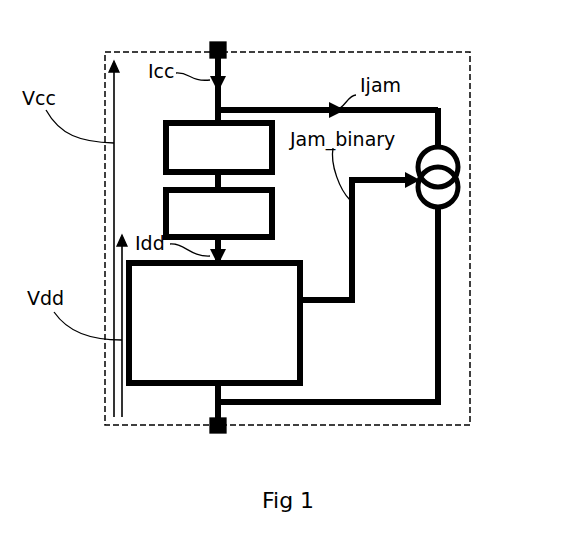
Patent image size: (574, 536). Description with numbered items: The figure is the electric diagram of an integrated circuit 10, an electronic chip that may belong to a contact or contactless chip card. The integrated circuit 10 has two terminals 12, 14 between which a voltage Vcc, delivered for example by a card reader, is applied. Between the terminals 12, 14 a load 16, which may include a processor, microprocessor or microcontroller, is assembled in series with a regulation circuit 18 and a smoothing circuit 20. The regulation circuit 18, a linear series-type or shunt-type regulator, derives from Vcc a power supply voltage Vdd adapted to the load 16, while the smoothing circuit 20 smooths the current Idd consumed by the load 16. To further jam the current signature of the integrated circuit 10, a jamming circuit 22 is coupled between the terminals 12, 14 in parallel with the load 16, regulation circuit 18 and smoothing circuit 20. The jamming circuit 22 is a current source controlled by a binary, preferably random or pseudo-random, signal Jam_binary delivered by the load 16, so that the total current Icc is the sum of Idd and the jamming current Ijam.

The integrated circuit 10 is at (474, 72).
The terminal 12 is at (216, 42).
The terminal 14 is at (216, 434).
The load 16 is at (300, 368).
The regulation circuit 18 is at (166, 227).
The smoothing circuit 20 is at (166, 160).
The jamming circuit 22 is at (430, 206).